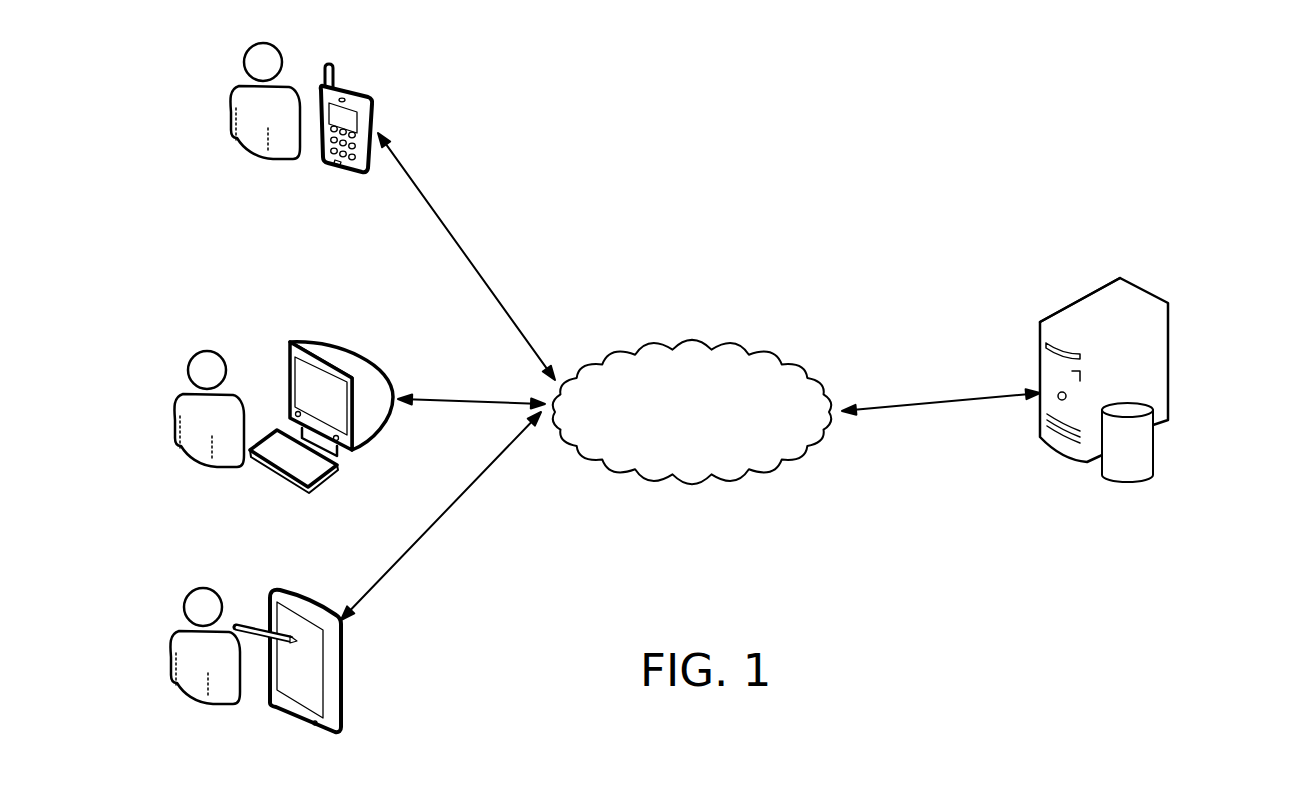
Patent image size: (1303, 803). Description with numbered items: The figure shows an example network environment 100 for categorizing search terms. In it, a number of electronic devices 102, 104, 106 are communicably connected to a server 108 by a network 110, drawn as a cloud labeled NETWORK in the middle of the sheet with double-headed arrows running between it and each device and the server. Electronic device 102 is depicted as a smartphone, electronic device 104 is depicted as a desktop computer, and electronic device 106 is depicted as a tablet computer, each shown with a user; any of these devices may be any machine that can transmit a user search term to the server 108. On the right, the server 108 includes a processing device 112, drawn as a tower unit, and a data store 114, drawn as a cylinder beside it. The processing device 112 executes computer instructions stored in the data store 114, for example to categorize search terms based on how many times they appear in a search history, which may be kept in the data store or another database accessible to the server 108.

The network environment 100 is at (815, 83).
The electronic device 102 is at (357, 92).
The electronic device 104 is at (367, 357).
The electronic device 106 is at (293, 590).
The server 108 is at (1060, 310).
The network 110 is at (692, 340).
The processing device 112 is at (1148, 292).
The data store 114 is at (1156, 477).